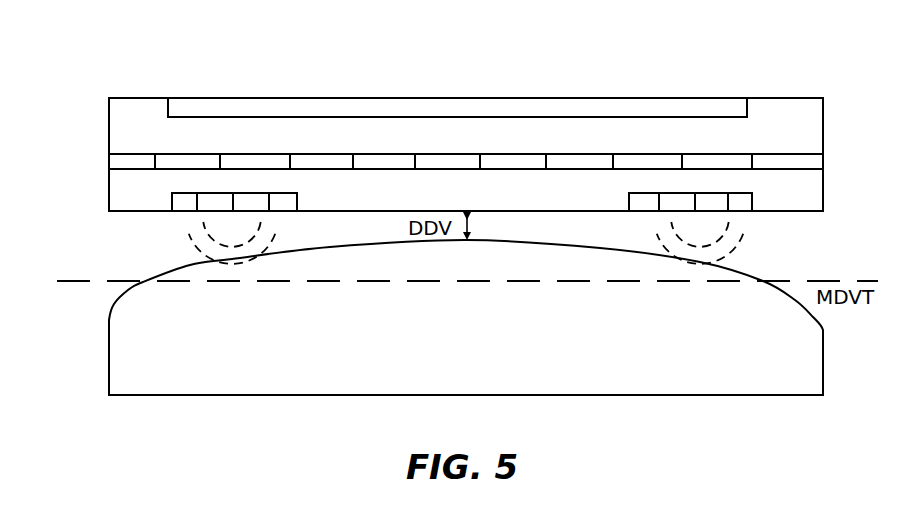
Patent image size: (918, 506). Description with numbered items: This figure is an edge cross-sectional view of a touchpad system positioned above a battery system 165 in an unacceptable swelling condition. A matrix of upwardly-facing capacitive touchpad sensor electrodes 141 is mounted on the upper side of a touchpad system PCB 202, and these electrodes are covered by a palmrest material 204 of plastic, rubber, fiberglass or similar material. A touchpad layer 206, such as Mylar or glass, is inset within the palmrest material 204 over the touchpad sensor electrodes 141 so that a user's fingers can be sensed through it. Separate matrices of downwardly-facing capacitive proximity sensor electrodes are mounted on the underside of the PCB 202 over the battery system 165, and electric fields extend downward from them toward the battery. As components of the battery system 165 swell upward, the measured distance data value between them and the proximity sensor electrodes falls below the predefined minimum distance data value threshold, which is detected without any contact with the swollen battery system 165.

The capacitive touchpad sensor electrode 141 is at (513, 163).
The battery system 165 is at (109, 357).
The touchpad system PCB 202 is at (825, 194).
The palmrest material 204 is at (803, 126).
The touchpad layer 206 is at (325, 107).